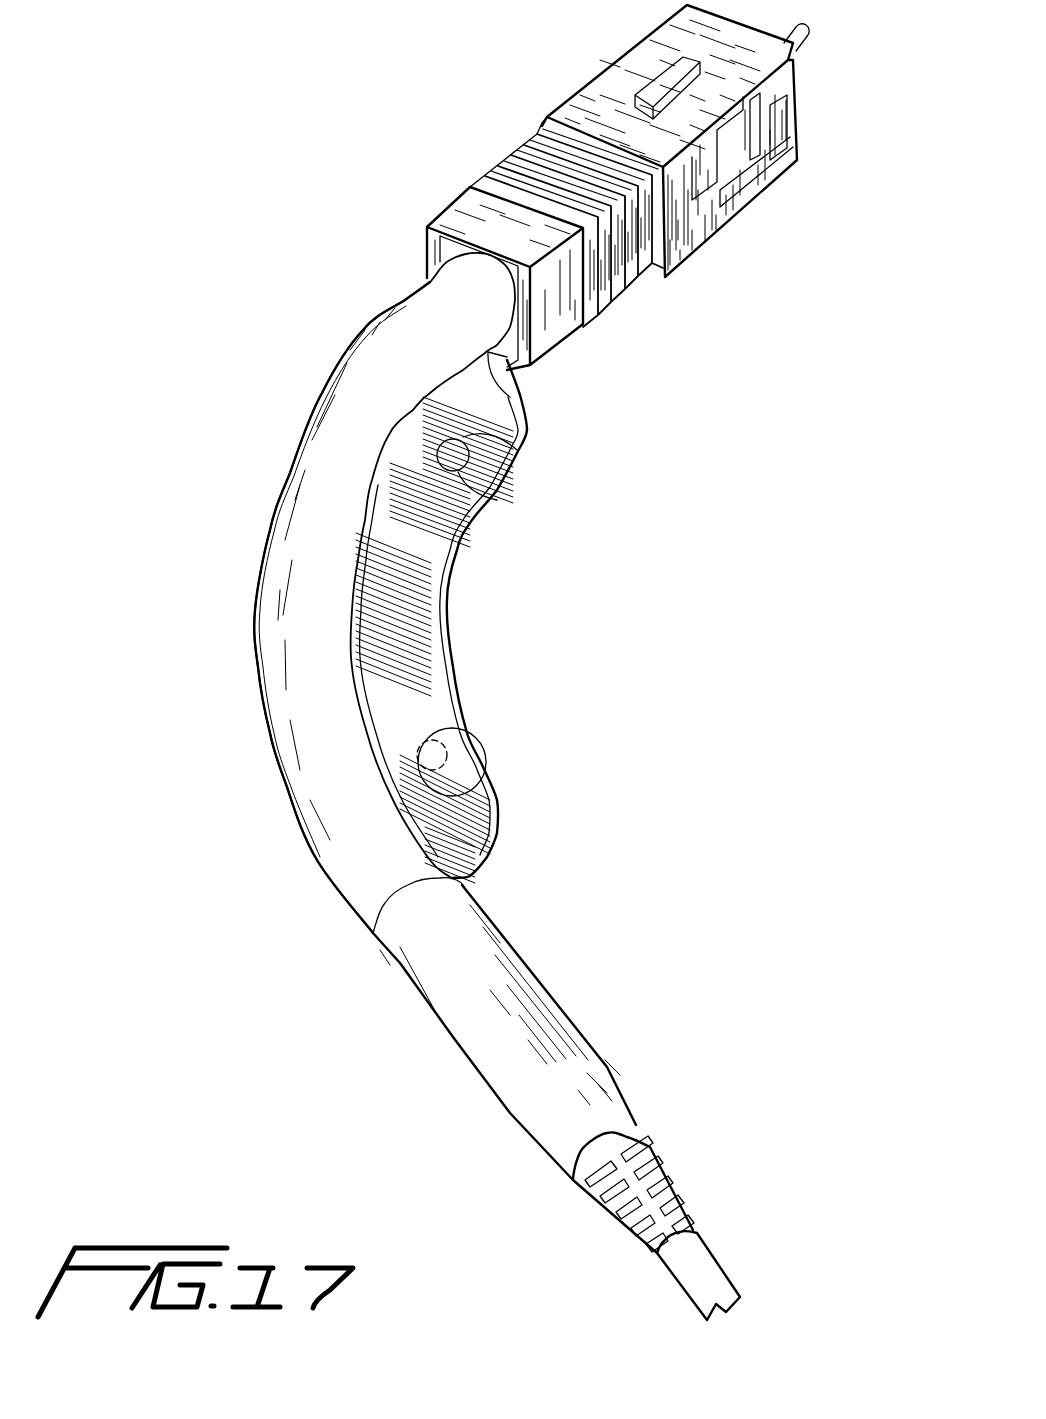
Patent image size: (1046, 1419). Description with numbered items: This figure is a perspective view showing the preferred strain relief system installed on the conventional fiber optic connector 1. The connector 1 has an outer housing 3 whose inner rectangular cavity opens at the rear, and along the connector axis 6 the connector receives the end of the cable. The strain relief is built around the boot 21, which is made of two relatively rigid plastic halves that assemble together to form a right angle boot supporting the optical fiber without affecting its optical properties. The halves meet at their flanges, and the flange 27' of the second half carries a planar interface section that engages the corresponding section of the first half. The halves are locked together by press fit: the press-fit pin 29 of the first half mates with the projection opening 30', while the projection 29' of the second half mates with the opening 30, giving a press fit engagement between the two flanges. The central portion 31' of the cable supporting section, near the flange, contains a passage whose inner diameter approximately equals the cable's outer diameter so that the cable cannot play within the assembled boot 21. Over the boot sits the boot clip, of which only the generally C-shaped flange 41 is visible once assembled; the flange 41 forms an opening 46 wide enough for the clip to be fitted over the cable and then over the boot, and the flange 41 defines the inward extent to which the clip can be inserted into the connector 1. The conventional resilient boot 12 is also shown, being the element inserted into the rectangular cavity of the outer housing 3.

The fiber optic connector 1 is at (802, 225).
The outer housing 3 is at (615, 80).
The flange 41 is at (427, 244).
The opening 46 is at (520, 398).
The press-fit pin 29 is at (545, 460).
The projection opening 30' is at (562, 521).
The flange 27' is at (446, 640).
The projection 29' is at (506, 732).
The boot 21 is at (718, 692).
The central portion 31' is at (287, 607).
The opening 30 is at (538, 776).
The resilient boot 12 is at (598, 1010).
The connector axis 6 is at (705, 1272).